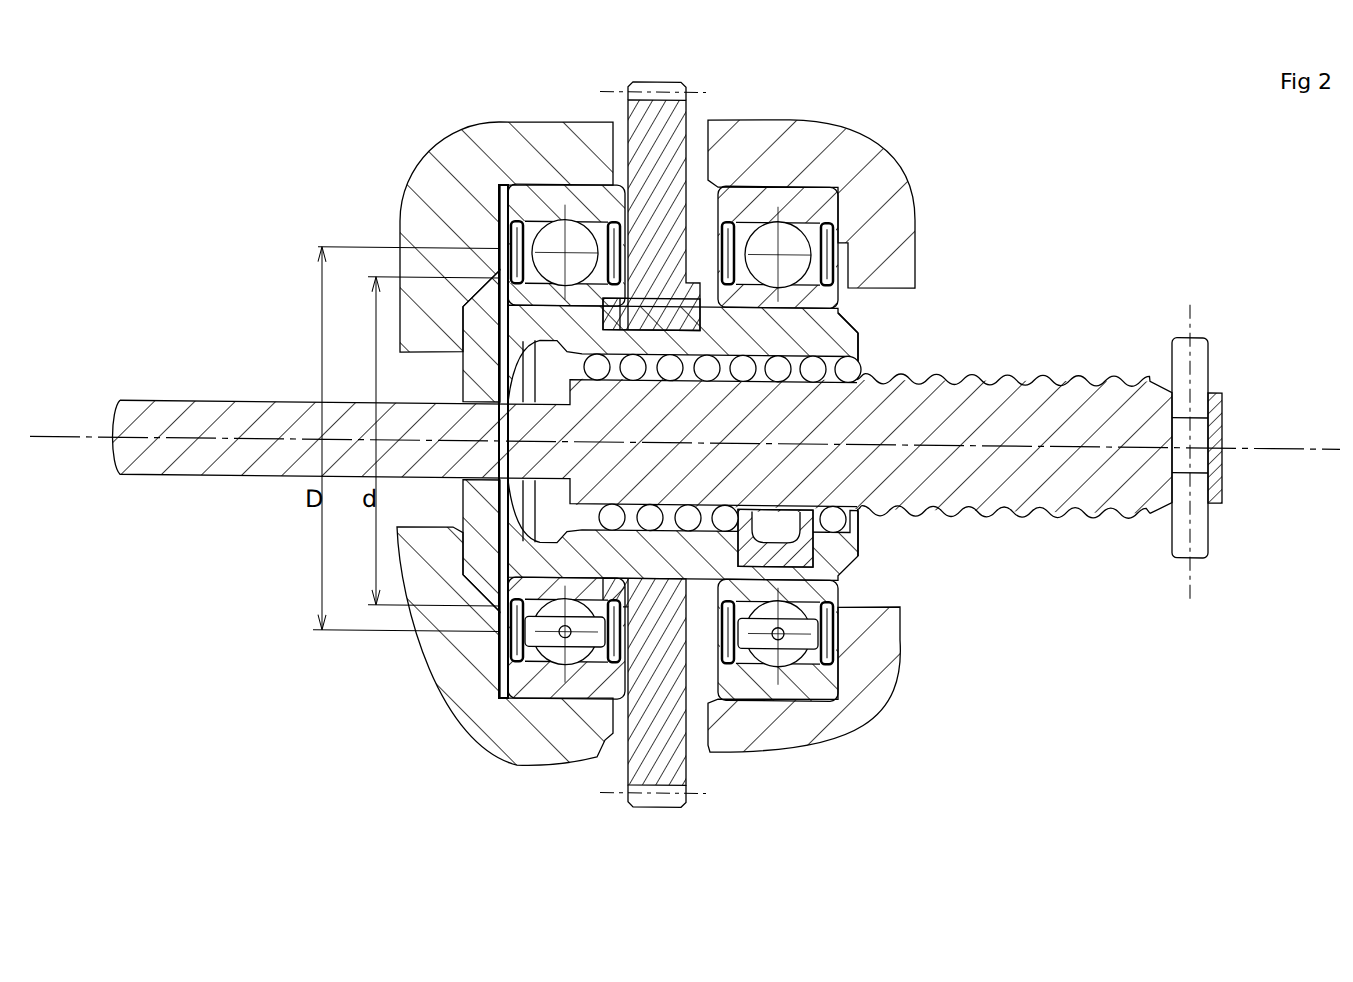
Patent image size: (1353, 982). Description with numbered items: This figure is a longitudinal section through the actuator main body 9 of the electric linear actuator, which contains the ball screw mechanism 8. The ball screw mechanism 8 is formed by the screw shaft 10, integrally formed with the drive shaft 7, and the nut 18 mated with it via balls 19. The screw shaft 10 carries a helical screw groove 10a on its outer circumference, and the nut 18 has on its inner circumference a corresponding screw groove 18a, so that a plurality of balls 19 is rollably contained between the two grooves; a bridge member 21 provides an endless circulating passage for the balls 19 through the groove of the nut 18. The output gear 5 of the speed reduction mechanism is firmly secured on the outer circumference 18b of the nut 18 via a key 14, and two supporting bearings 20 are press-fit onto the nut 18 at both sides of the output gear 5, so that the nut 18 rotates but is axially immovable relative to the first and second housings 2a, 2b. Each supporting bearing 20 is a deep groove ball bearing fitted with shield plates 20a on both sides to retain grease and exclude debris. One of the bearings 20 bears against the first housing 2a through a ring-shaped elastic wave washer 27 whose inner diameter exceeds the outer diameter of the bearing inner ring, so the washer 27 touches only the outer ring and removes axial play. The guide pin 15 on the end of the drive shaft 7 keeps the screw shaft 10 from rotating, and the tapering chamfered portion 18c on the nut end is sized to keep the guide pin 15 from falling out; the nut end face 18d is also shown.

The first housing 2a is at (477, 732).
The second housing 2b is at (807, 729).
The output gear 5 is at (625, 444).
The drive shaft 7 is at (643, 411).
The ball screw mechanism 8 is at (684, 404).
The actuator main body 9 is at (643, 403).
The screw shaft 10 is at (643, 411).
The screw groove 10a is at (955, 378).
The key 14 is at (695, 285).
The guide pin 15 is at (1194, 347).
The nut 18 is at (463, 354).
The screw groove 18a is at (840, 376).
The outer circumference 18b is at (717, 409).
The tapering chamfered portion 18c is at (863, 318).
The nut end face (lower) 18d is at (858, 542).
The ball 19 is at (782, 371).
The supporting bearing 20 is at (688, 414).
The shield plate 20a is at (506, 264).
The bridge member 21 is at (805, 541).
The elastic washer 27 is at (492, 215).